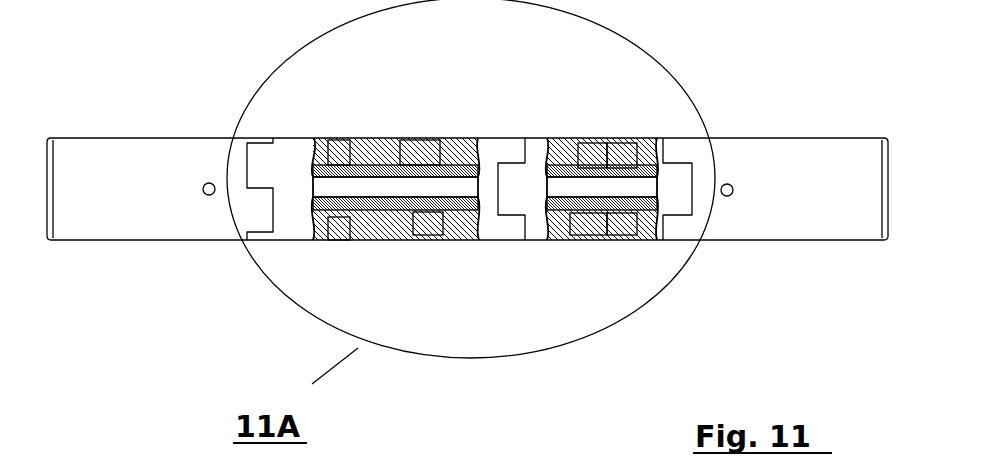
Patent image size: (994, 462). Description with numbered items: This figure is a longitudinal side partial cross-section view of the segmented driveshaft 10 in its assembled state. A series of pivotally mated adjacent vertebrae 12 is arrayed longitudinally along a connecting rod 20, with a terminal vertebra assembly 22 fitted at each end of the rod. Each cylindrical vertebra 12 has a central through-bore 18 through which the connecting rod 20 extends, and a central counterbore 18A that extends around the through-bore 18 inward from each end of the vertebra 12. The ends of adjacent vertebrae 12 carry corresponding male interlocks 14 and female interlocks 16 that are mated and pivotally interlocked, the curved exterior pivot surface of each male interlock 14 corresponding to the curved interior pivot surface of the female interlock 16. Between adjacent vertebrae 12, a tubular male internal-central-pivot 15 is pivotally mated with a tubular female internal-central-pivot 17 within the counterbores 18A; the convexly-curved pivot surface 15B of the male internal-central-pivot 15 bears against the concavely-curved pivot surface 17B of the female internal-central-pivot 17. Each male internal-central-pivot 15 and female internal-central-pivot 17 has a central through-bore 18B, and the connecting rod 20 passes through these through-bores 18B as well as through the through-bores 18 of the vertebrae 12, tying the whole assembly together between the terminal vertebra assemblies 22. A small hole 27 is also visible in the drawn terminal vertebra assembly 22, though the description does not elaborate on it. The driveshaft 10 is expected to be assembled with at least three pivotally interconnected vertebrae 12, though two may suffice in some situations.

The segmented driveshaft 10 is at (108, 105).
The vertebra 12 is at (290, 155).
The male interlock 14 is at (262, 162).
The male internal-central-pivot 15 is at (350, 150).
The convexly-curved pivot surface 15B is at (622, 210).
The female interlock 16 is at (240, 160).
The female internal-central-pivot 17 is at (376, 152).
The concavely-curved pivot surface 17B is at (626, 208).
The central through-bore 18 is at (398, 168).
The central counterbore 18A is at (318, 228).
The central through-bore 18B is at (374, 212).
The connecting rod 20 is at (430, 185).
The terminal vertebra assembly 22 is at (782, 177).
The hole 27 is at (204, 194).